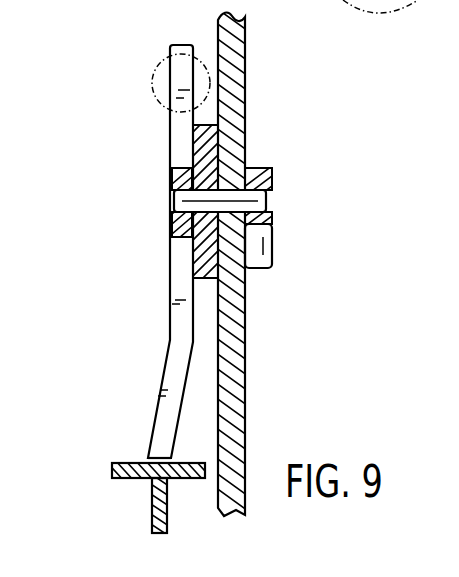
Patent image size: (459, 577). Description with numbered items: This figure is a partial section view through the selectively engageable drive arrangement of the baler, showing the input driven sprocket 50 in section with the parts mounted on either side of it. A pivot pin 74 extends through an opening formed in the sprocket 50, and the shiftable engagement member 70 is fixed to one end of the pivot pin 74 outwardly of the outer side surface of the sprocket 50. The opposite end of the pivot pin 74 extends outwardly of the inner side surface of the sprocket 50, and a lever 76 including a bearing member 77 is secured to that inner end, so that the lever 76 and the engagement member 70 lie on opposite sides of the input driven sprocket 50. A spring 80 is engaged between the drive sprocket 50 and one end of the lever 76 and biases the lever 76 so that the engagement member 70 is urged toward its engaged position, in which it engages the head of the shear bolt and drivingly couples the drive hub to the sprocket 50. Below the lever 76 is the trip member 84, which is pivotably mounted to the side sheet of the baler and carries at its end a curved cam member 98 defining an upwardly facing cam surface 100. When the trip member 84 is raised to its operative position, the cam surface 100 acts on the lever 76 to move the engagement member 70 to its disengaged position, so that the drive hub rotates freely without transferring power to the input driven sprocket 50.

The input driven sprocket 50 is at (245, 368).
The shiftable engagement member 70 is at (272, 244).
The pivot pin 74 is at (232, 198).
The lever 76 is at (168, 141).
The bearing member 77 is at (212, 117).
The spring 80 is at (158, 64).
The trip member 84 is at (125, 503).
The curved cam member 98 is at (112, 470).
The cam surface 100 is at (137, 462).